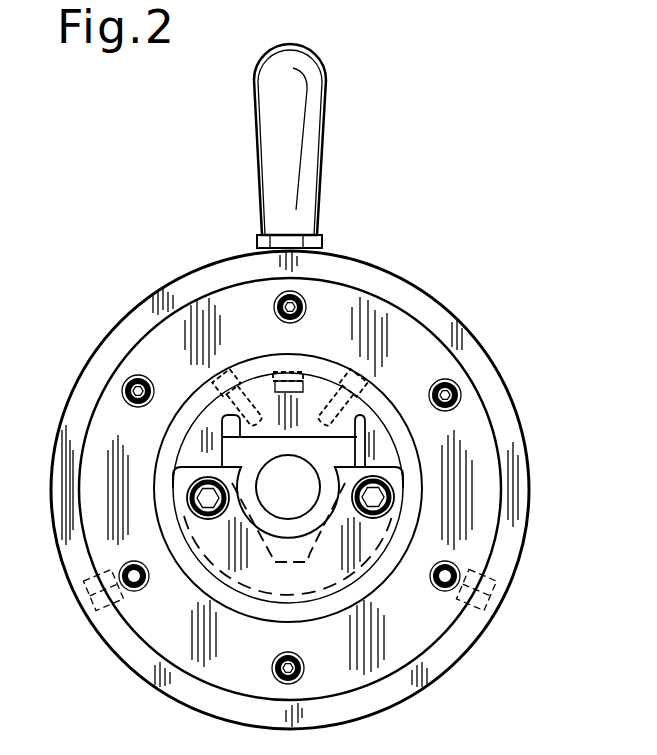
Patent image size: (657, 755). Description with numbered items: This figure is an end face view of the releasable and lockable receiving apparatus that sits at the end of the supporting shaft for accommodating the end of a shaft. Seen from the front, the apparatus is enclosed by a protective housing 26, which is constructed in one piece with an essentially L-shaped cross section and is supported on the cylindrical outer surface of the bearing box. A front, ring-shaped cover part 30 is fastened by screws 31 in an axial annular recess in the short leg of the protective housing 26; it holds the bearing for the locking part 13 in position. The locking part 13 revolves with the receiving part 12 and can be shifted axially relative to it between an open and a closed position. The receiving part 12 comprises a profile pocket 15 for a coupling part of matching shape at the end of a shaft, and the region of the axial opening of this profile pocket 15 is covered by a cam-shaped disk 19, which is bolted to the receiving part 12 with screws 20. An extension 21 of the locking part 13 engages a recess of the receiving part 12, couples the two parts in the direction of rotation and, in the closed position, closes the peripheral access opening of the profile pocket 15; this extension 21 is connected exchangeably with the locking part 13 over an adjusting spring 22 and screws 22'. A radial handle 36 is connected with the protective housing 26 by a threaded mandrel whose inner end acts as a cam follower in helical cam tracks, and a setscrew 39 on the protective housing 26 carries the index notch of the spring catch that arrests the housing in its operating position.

The receiving part 12 is at (370, 432).
The locking part 13 is at (172, 450).
The profile pocket 15 is at (340, 452).
The cam-shaped disk 19 is at (373, 532).
The screws 20 is at (378, 497).
The extension 21 is at (317, 393).
The adjusting spring 22 is at (296, 310).
The screws 22' is at (420, 328).
The protective housing 26 is at (218, 272).
The cover part 30 is at (168, 333).
The screws 31 is at (128, 382).
The radial handle 36 is at (272, 82).
The setscrew 39 is at (480, 598).